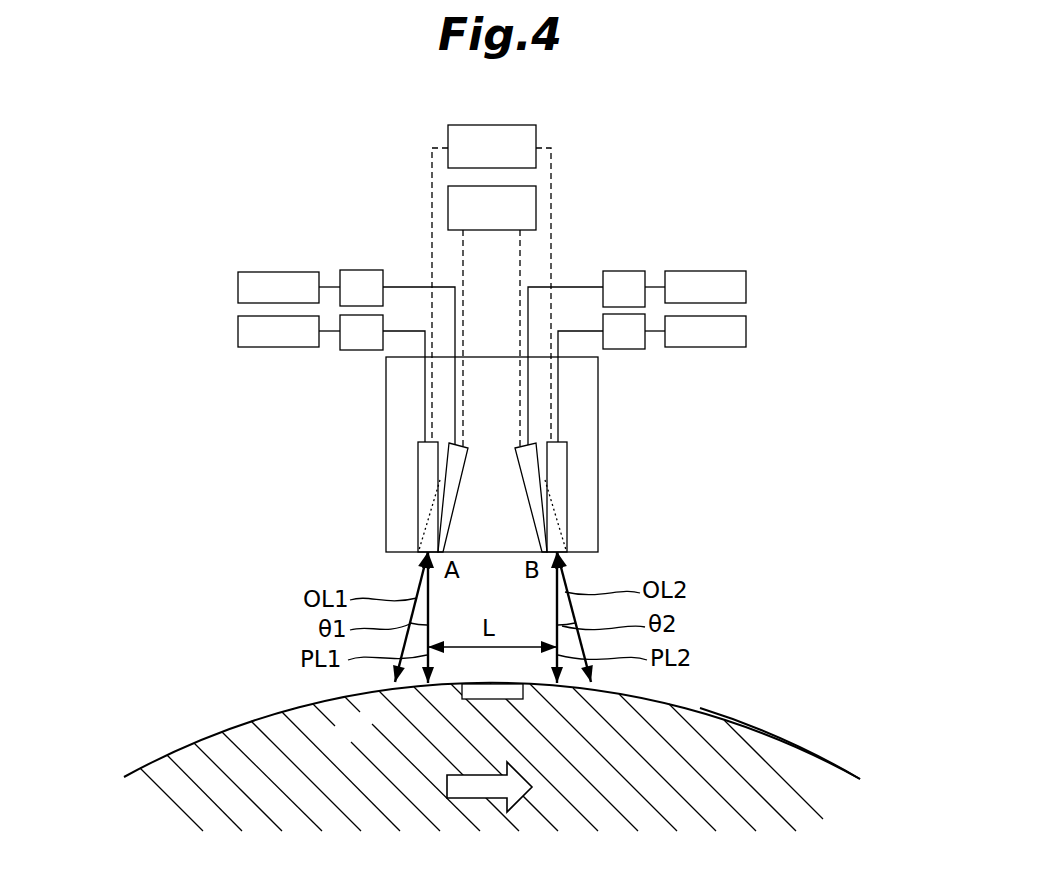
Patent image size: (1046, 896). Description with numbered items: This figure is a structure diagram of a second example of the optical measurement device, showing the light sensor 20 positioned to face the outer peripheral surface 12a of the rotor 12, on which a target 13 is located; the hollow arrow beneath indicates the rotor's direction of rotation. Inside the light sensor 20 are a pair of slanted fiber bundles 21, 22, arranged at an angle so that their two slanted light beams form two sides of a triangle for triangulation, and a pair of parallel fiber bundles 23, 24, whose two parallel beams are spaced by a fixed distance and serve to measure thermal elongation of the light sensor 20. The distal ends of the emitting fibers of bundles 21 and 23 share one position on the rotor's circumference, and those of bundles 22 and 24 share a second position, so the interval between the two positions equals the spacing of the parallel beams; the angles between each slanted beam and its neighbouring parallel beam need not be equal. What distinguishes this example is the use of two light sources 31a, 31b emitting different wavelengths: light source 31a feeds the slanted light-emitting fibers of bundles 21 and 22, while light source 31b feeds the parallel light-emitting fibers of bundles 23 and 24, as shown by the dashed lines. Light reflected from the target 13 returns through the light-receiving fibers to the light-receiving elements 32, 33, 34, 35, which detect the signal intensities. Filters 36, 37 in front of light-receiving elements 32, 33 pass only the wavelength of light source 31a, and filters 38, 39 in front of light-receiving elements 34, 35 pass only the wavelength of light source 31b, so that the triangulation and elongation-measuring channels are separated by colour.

The rotor 12 is at (366, 740).
The outer peripheral surface 12a is at (773, 737).
The target 13 is at (497, 699).
The light sensor 20 is at (598, 437).
The slanted fiber bundle 21 is at (448, 476).
The slanted fiber bundle 22 is at (537, 477).
The parallel fiber bundle 23 is at (425, 512).
The parallel fiber bundle 24 is at (558, 512).
The light source 31a is at (470, 227).
The light source 31b is at (470, 166).
The light-receiving element 32 is at (278, 282).
The light-receiving element 33 is at (704, 280).
The light-receiving element 34 is at (282, 340).
The light-receiving element 35 is at (708, 340).
The filter 36 is at (362, 280).
The filter 37 is at (624, 280).
The filter 38 is at (363, 340).
The filter 39 is at (628, 340).